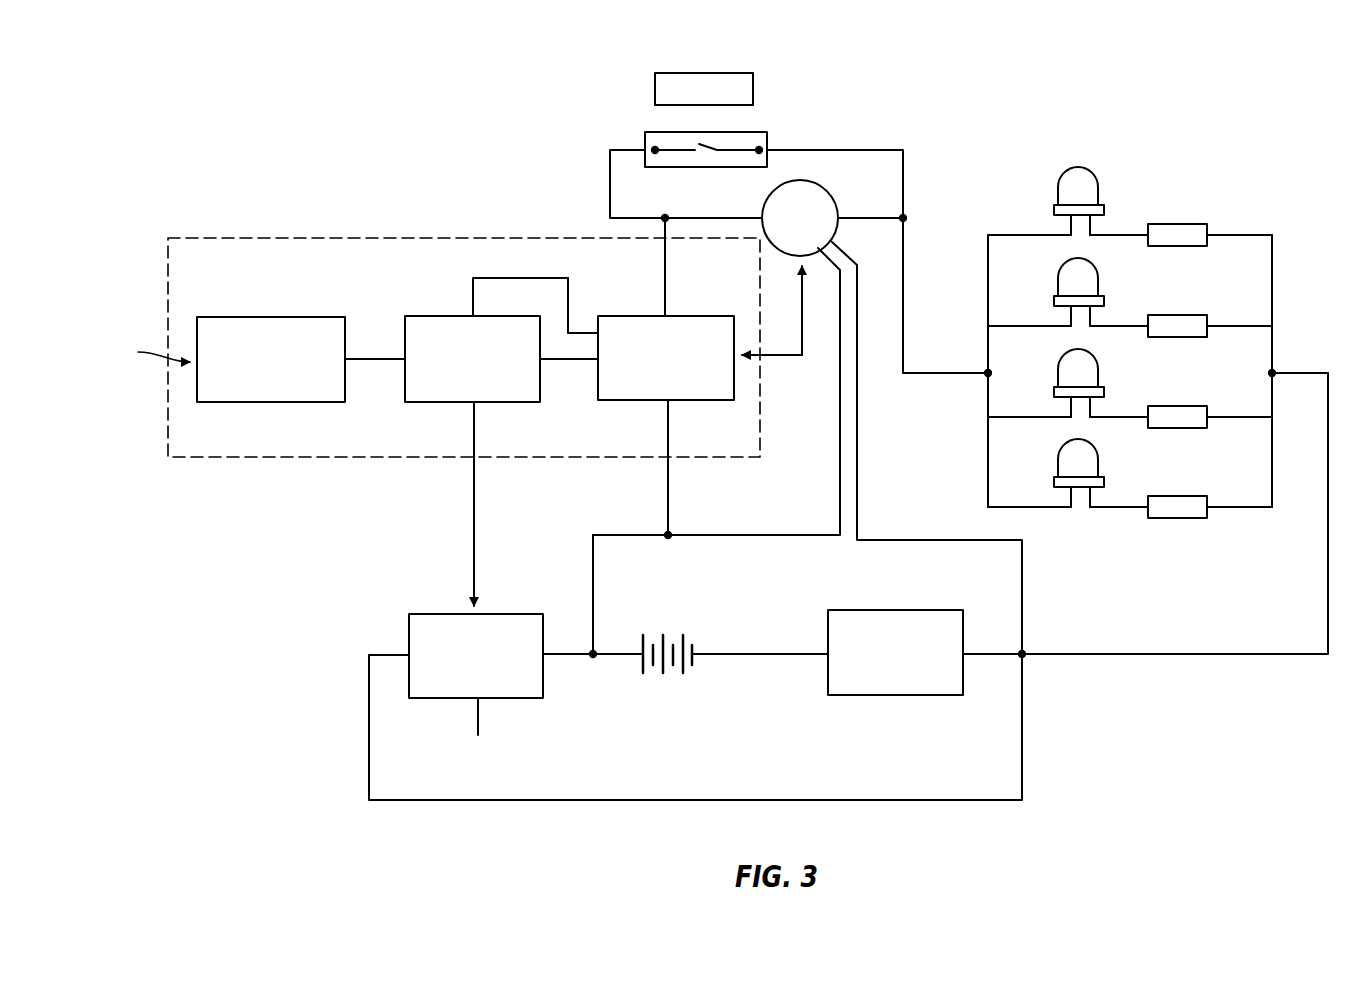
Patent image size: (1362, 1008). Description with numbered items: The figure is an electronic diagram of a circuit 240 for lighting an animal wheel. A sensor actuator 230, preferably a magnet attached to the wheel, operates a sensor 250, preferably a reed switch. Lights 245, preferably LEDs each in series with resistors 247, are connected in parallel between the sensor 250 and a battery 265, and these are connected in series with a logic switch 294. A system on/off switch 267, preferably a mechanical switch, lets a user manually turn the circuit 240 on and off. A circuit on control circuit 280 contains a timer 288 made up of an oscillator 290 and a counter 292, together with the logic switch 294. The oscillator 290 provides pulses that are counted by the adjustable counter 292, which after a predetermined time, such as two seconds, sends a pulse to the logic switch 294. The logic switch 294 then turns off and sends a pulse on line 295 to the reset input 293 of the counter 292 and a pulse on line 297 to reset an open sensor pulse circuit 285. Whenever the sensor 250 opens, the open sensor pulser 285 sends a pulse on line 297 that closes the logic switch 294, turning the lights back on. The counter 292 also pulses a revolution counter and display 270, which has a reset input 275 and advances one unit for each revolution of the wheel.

The sensor actuator 230 is at (665, 72).
The sensor 250 is at (645, 140).
The open sensor pulse circuit 285 is at (835, 195).
The line 297 is at (787, 358).
The circuit on control circuit 280 is at (275, 230).
The timer 288 is at (145, 355).
The oscillator 290 is at (232, 404).
The counter 292 is at (432, 404).
The reset input 293 is at (471, 300).
The line 295 is at (556, 278).
The logic switch 294 is at (632, 402).
The revolution counter and display 270 is at (436, 612).
The reset input 275 is at (480, 716).
The battery 265 is at (672, 684).
The system on/off switch 267 is at (850, 697).
The circuit 240 is at (1164, 291).
The lights 245 is at (1065, 170).
The resistors 247 is at (1183, 222).